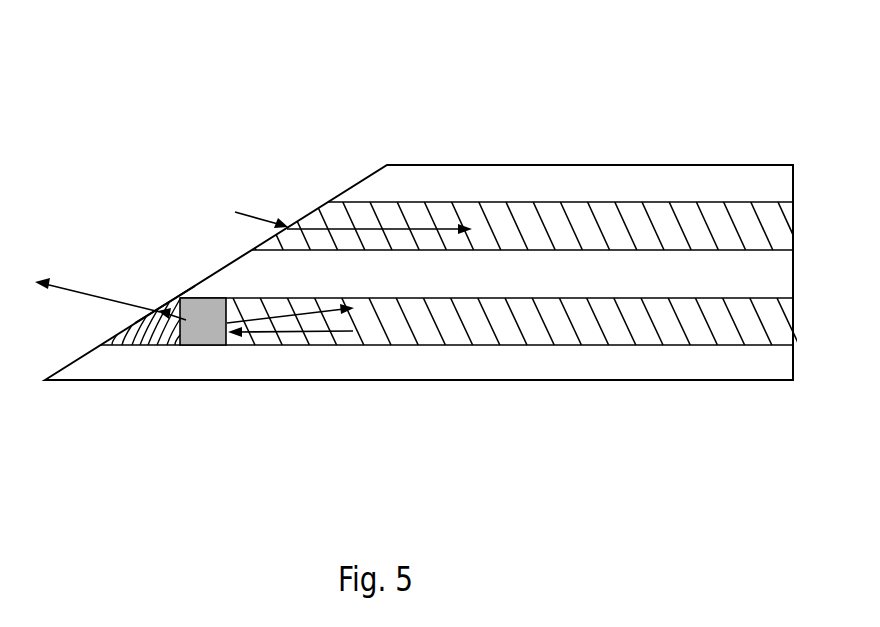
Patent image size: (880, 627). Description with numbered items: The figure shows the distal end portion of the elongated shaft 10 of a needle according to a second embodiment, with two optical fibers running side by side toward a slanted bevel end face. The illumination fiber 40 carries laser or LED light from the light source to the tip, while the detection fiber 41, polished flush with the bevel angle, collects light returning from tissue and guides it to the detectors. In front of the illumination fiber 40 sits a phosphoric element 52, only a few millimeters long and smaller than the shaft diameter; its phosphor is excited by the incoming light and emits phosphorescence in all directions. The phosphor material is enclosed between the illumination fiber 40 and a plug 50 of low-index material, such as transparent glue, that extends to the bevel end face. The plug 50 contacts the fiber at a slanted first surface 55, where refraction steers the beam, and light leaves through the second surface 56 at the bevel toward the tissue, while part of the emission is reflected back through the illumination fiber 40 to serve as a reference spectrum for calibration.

The shaft 10 is at (678, 183).
The detection fiber 41 is at (532, 227).
The illumination fiber 40 is at (638, 320).
The phosphoric element 52 is at (196, 328).
The plug 50 is at (156, 345).
The first surface 55 is at (175, 303).
The second surface 56 is at (118, 335).